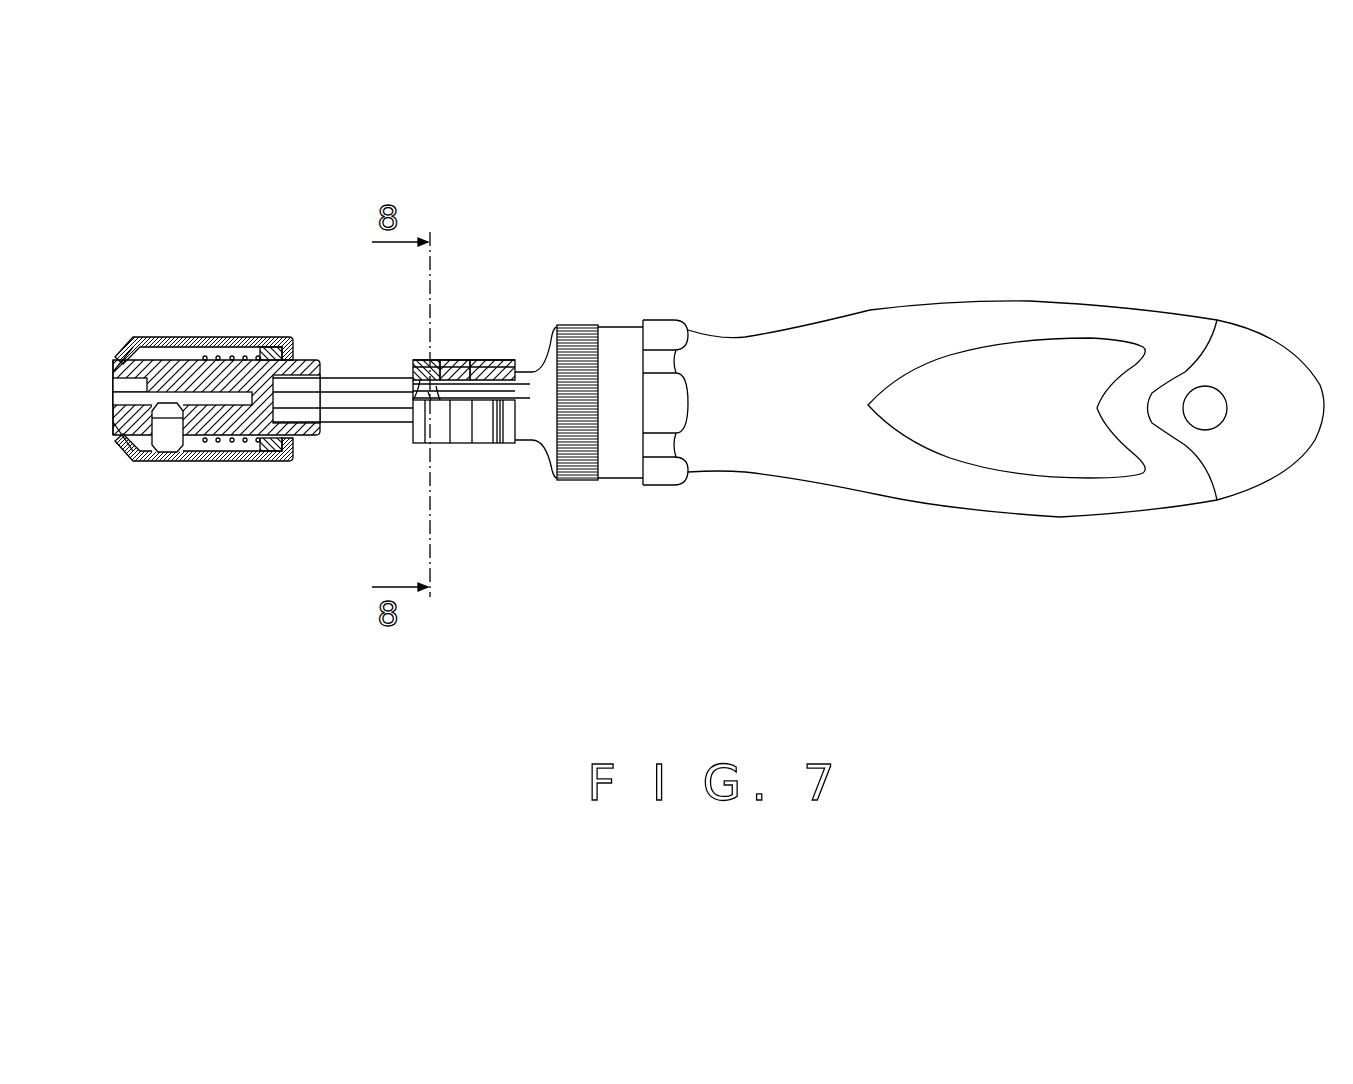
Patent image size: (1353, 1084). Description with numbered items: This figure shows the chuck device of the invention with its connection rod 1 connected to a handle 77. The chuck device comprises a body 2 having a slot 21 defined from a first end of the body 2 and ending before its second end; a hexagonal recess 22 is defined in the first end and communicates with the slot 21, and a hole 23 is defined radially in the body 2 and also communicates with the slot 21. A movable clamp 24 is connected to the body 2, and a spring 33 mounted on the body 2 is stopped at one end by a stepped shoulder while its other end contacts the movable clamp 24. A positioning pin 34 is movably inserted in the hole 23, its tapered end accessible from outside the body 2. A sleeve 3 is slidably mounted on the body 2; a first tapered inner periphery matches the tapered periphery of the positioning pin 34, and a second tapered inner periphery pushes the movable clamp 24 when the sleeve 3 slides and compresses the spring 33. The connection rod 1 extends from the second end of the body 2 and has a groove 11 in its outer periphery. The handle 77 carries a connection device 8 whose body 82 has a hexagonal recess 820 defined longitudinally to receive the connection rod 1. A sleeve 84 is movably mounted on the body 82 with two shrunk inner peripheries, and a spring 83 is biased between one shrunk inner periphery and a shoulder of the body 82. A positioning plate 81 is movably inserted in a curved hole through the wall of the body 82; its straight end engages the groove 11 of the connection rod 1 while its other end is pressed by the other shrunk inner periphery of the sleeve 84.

The connection rod 1 is at (330, 393).
The body 2 is at (310, 440).
The sleeve 3 is at (240, 462).
The connection device 8 is at (455, 437).
The groove 11 is at (431, 395).
The slot 21 is at (125, 430).
The hexagonal recess 22 is at (125, 380).
The hole 23 is at (187, 412).
The movable clamp 24 is at (275, 350).
The spring 33 is at (232, 355).
The positioning pin 34 is at (170, 440).
The handle 77 is at (875, 340).
The positioning plate 81 is at (437, 363).
The body 82 is at (425, 366).
The spring 83 is at (482, 365).
The sleeve 84 is at (510, 366).
The hexagonal recess 820 is at (512, 420).